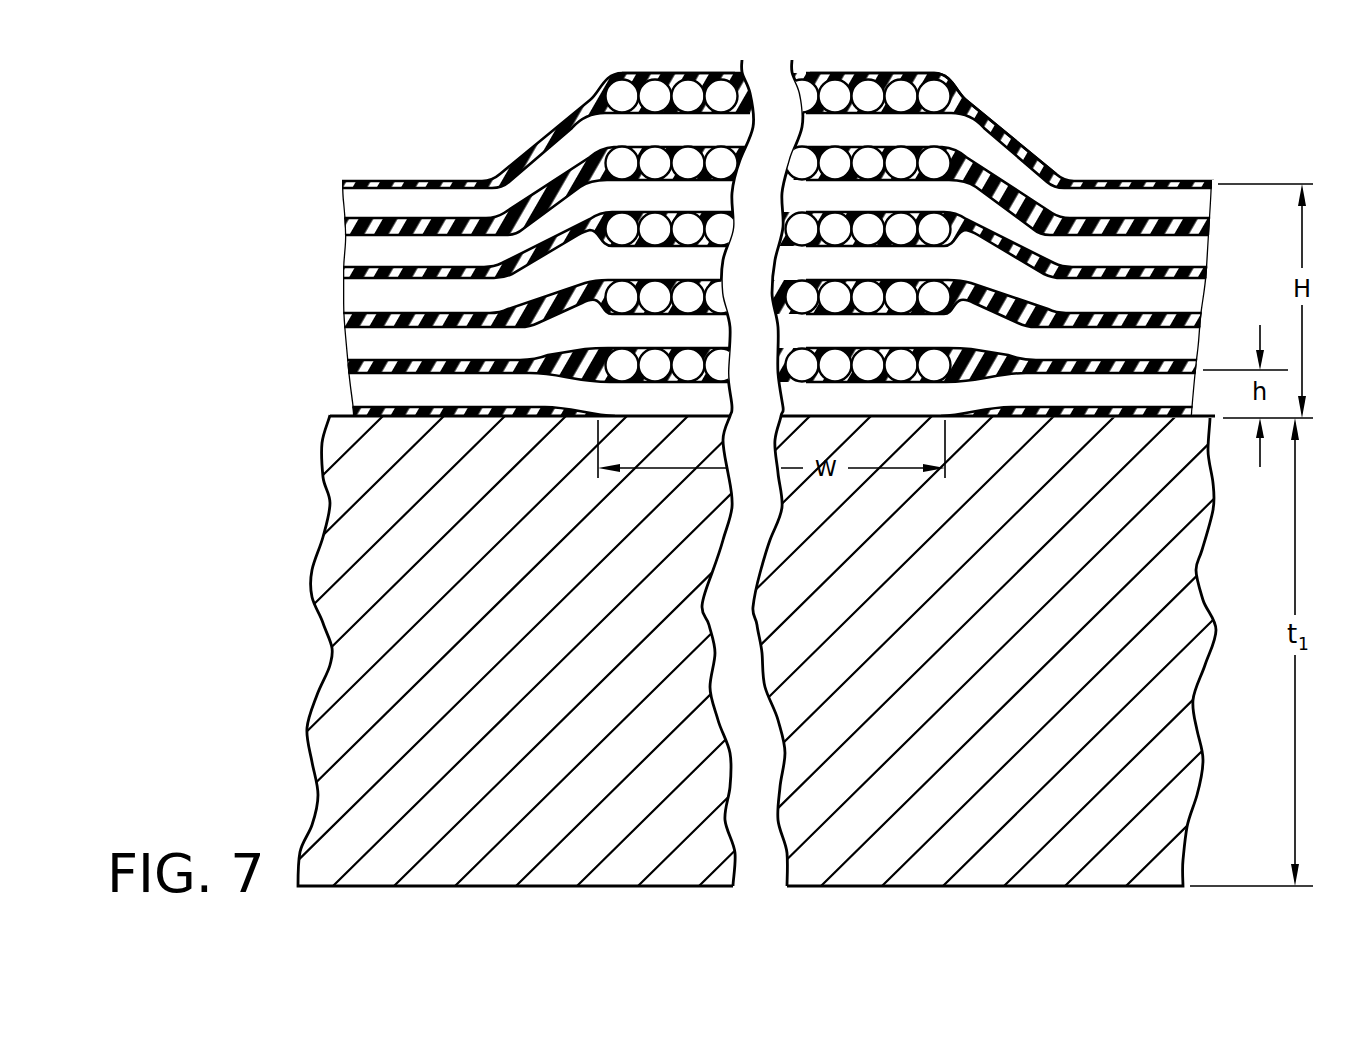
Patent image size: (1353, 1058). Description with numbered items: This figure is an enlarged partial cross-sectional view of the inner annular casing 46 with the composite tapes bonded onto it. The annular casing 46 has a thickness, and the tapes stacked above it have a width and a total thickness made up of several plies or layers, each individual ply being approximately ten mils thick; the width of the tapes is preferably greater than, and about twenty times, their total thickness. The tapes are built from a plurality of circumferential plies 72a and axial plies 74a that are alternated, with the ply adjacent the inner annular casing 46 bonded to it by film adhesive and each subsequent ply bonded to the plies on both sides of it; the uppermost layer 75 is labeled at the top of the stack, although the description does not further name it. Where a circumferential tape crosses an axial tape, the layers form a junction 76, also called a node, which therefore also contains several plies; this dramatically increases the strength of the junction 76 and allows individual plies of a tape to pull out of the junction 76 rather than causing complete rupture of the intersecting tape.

The inner annular casing 46 is at (340, 667).
The circumferential plies 72a is at (690, 213).
The axial plies 74a is at (361, 252).
The top particle layer 75 is at (614, 100).
The junction 76 is at (973, 79).